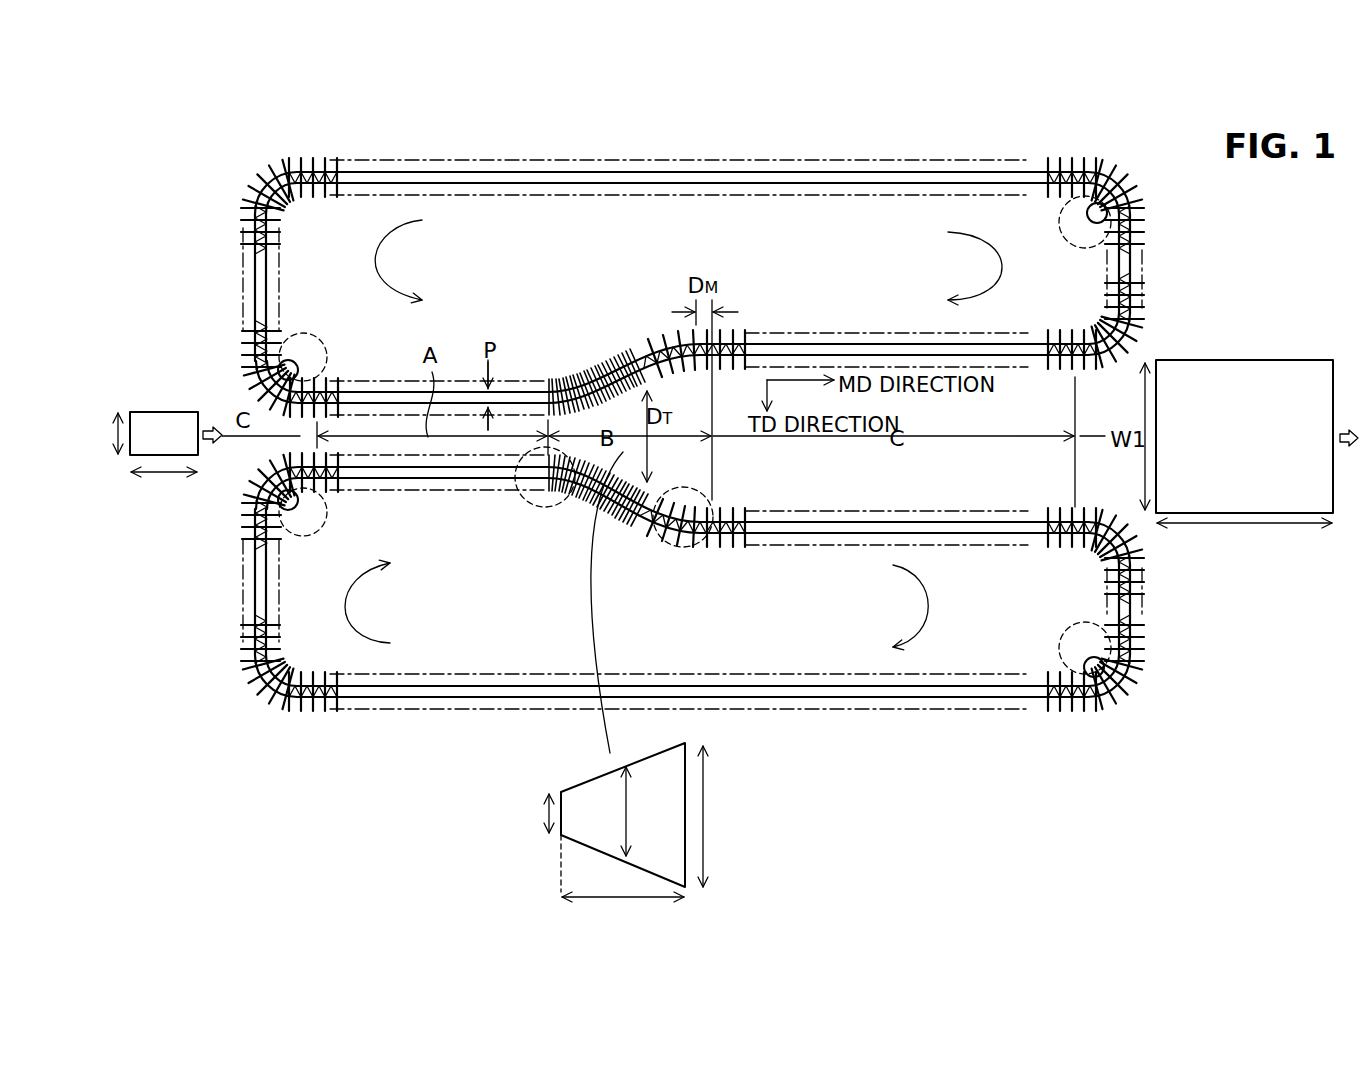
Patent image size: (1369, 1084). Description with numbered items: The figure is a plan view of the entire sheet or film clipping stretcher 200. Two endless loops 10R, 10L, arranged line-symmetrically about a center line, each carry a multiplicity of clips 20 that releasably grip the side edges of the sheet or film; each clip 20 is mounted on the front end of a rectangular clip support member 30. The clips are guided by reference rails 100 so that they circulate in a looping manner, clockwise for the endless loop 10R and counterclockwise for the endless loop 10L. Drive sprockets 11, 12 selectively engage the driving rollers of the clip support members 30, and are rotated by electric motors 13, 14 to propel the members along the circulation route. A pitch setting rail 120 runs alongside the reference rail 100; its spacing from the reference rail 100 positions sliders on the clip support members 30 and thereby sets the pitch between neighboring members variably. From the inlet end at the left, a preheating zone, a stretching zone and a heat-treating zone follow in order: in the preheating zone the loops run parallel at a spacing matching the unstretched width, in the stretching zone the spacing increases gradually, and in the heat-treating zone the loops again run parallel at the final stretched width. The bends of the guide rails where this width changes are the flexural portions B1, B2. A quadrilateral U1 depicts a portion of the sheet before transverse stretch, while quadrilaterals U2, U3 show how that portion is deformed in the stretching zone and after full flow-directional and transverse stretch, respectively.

The sheet or film clipping stretcher 200 is at (232, 160).
The endless loop 10L is at (856, 157).
The endless loop 10R is at (810, 720).
The drive sprocket 11 is at (322, 362).
The drive sprocket 12 is at (1075, 222).
The electric motor 13 is at (300, 352).
The electric motor 14 is at (1078, 248).
The clip 20 is at (698, 372).
The clip support member 30 is at (647, 385).
The reference rail 100 is at (1000, 370).
The pitch setting rail 120 is at (878, 336).
The flexural portion B1 is at (546, 508).
The flexural portion B2 is at (684, 548).
The quadrilateral U1 is at (151, 457).
The quadrilateral U2 is at (598, 790).
The quadrilateral U3 is at (1251, 456).